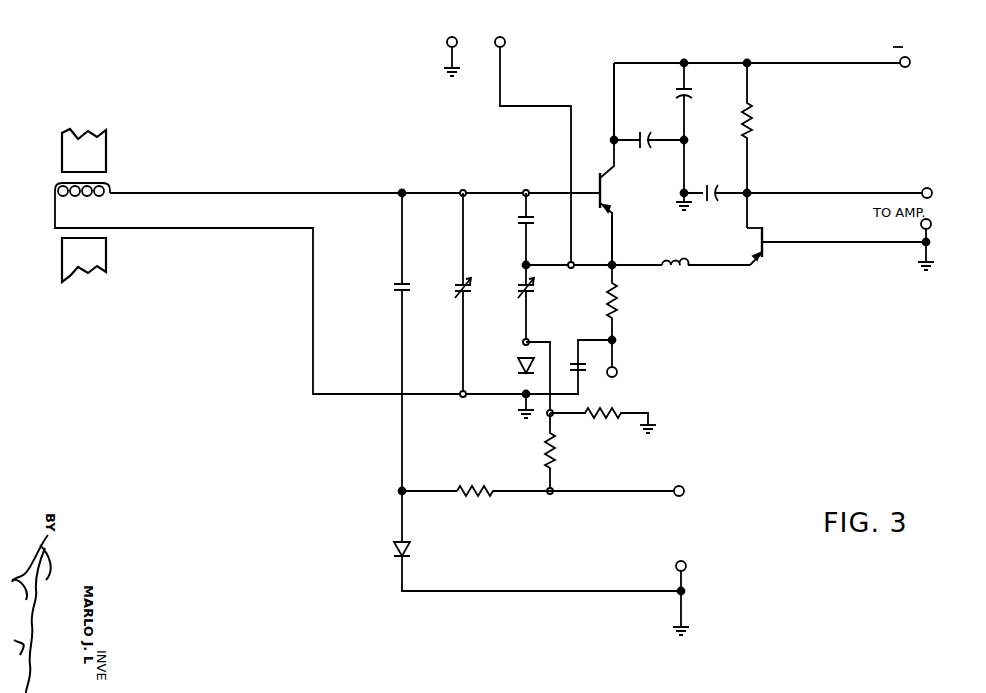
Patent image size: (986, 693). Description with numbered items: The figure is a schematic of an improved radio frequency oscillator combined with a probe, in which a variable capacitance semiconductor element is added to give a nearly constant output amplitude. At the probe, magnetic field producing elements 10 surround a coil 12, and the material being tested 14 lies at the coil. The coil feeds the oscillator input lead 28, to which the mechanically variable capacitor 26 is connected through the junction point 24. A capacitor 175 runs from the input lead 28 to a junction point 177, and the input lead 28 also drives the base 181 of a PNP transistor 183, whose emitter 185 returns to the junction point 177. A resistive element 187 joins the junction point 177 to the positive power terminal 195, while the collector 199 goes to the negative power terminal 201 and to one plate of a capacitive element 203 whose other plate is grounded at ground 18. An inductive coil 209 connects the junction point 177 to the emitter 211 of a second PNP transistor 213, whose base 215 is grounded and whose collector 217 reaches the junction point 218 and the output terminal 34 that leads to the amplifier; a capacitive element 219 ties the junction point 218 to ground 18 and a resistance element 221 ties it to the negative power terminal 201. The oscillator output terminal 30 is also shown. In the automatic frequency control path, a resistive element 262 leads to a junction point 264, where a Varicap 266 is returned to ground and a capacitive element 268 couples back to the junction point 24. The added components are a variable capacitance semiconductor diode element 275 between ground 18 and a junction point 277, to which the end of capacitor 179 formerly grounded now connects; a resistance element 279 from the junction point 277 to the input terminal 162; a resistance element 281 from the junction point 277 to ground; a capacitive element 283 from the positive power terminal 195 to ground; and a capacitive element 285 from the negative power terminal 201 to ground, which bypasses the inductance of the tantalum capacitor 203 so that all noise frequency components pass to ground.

The magnetic field producing elements 10 is at (107, 147).
The coil 12 is at (110, 186).
The material being tested 14 is at (62, 195).
The ground 18 is at (684, 206).
The junction point 24 is at (402, 190).
The mechanically variable capacitor 26 is at (460, 289).
The input lead 28 is at (526, 190).
The output terminal 30 is at (505, 41).
The output terminal 34 is at (930, 189).
The input terminal 162 is at (685, 489).
The capacitor 175 is at (530, 218).
The junction point 177 is at (530, 288).
The capacitor 179 is at (524, 286).
The base 181 is at (597, 190).
The PNP transistor 183 is at (637, 202).
The emitter 185 is at (628, 218).
The resistive element 187 is at (616, 300).
The positive power terminal 195 is at (620, 370).
The collector 199 is at (610, 160).
The negative power terminal 201 is at (910, 61).
The capacitive element 203 is at (648, 138).
The inductive coil 209 is at (685, 268).
The emitter 211 is at (755, 262).
The PNP transistor 213 is at (752, 248).
The base 215 is at (764, 240).
The collector 217 is at (758, 230).
The junction point 218 is at (750, 192).
The capacitive element 219 is at (708, 188).
The resistance element 221 is at (750, 118).
The resistive element 262 is at (467, 489).
The junction point 264 is at (401, 489).
The voltage variable capacitive semiconductive element (Varicap) 266 is at (401, 543).
The capacitive element 268 is at (402, 285).
The variable capacitance semiconductor diode element 275 is at (520, 366).
The junction point 277 is at (524, 340).
The resistance element 279 is at (553, 443).
The resistance element 281 is at (605, 413).
The capacitive element 283 is at (578, 363).
The capacitive element 285 is at (689, 92).